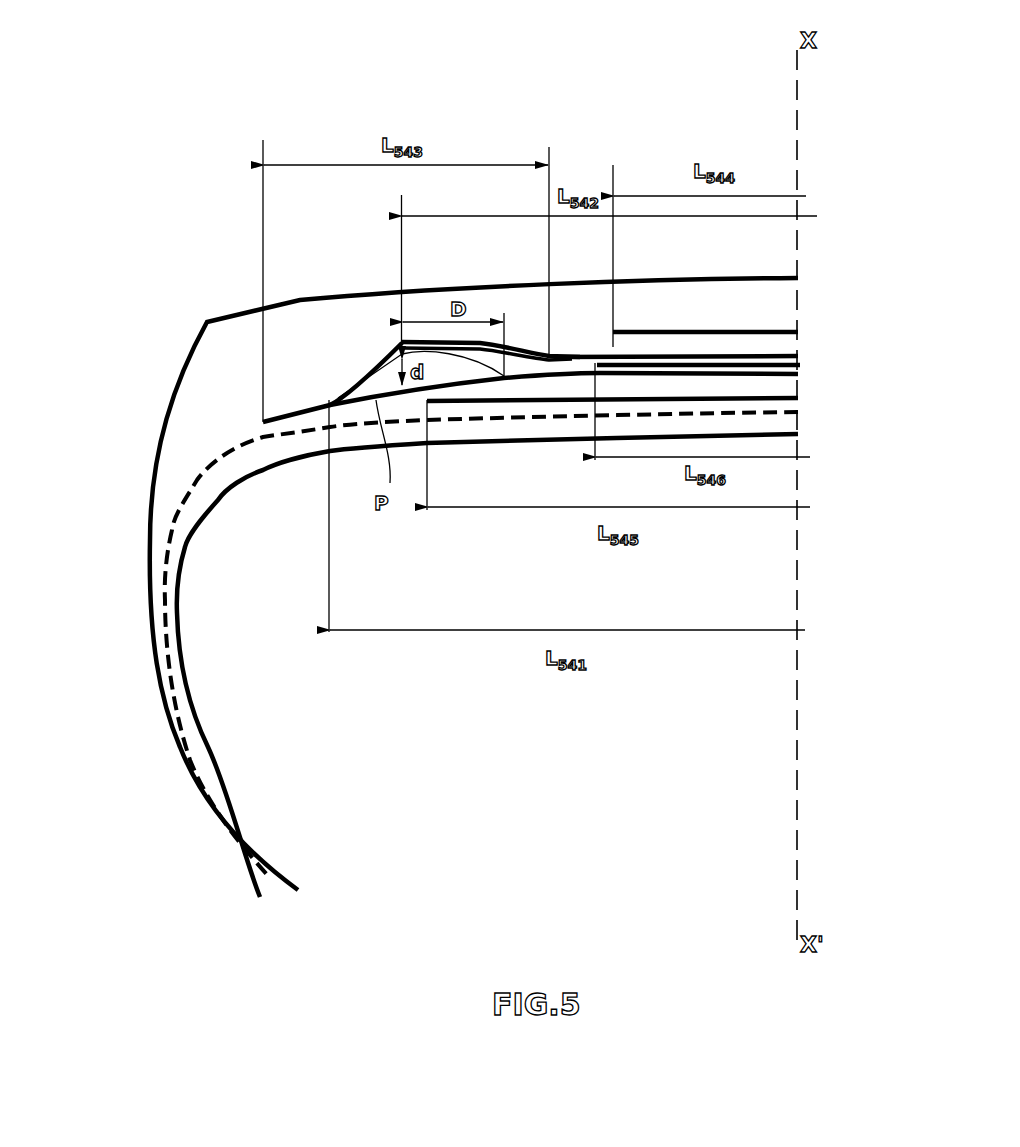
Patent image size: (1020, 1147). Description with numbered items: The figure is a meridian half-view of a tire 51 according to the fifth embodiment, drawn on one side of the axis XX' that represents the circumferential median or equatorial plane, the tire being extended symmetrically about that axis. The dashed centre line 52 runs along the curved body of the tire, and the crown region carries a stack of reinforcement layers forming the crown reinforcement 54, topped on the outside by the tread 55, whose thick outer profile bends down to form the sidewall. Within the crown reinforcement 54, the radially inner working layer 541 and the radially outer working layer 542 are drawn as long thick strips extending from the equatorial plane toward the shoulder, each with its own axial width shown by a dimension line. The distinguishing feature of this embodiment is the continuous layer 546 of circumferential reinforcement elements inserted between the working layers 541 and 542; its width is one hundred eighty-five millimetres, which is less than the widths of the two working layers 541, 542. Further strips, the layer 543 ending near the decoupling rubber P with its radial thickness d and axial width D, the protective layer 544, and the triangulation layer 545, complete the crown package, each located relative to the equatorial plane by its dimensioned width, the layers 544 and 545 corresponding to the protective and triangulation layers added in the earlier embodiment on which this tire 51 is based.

The tire 51 is at (115, 283).
The center axis of catheter 52 is at (172, 532).
The distal tip assembly 54 is at (826, 367).
The outer tube wall 55 is at (702, 293).
The working layer 541 is at (723, 378).
The working layer 542 is at (747, 353).
The tapered cover layer 543 is at (353, 388).
The outer sheath 544 is at (620, 332).
The inner liner 545 is at (528, 403).
The continuous layer of circumferential reinforcement elements 546 is at (773, 373).